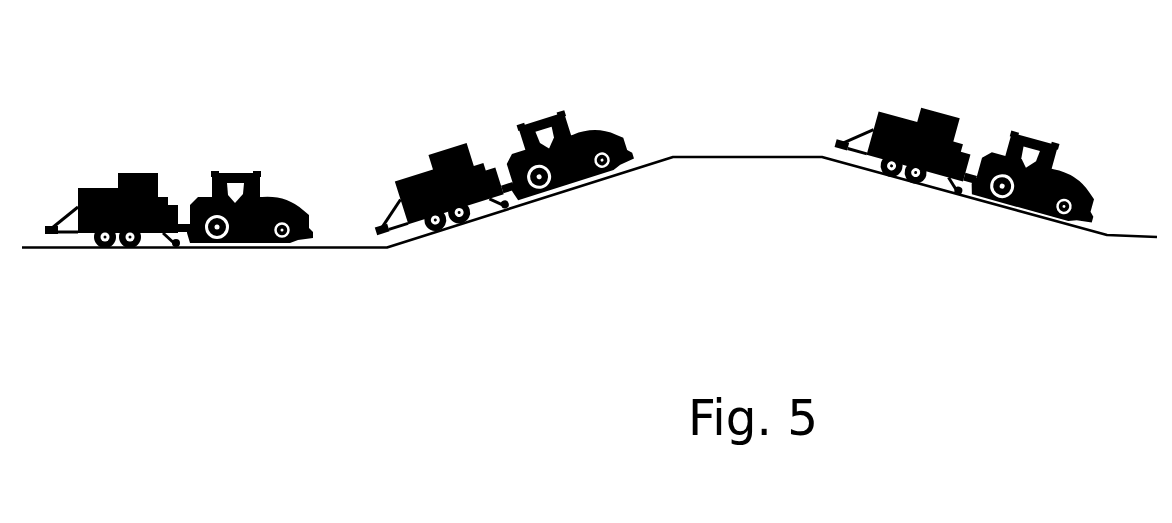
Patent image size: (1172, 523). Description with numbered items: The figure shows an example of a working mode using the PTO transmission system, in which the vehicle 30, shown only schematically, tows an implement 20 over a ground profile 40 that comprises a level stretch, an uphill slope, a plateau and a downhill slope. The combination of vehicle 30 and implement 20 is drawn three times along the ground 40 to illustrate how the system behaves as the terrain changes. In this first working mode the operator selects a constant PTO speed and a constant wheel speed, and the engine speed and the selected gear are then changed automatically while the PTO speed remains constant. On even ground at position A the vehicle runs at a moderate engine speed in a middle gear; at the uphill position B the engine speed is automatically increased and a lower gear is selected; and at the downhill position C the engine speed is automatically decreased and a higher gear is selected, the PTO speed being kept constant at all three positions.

The implement 20 is at (110, 186).
The vehicle 30 is at (235, 171).
The ground / terrain profile 40 is at (748, 155).
The position A is at (179, 270).
The uphill position B is at (507, 233).
The downhill position C is at (952, 213).